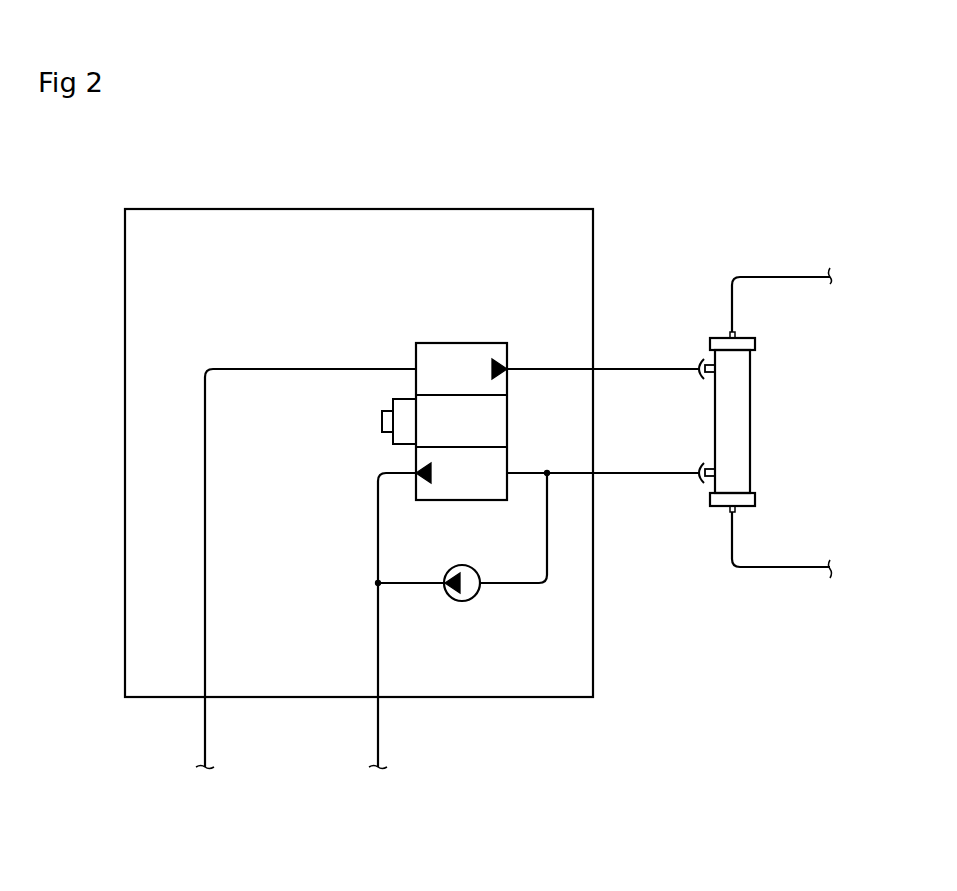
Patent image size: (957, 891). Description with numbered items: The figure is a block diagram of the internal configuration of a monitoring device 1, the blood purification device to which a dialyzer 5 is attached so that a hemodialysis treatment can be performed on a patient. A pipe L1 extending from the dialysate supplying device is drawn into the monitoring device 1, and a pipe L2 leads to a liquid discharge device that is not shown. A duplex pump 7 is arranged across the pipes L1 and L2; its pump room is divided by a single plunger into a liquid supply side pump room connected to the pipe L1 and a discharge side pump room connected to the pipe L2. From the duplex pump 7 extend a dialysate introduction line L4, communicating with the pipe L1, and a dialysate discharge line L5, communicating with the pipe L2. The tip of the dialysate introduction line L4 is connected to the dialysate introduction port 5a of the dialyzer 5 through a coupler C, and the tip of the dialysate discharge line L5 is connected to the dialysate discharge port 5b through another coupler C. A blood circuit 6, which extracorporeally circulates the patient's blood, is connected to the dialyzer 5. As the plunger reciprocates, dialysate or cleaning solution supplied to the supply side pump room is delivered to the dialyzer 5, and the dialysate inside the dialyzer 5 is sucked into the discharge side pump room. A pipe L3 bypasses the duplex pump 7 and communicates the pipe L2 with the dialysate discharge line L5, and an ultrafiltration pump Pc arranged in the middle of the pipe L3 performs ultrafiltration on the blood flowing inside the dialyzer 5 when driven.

The monitoring device 1 is at (528, 208).
The duplex pump 7 is at (483, 343).
The dialyzer 5 is at (750, 408).
The dialysate introduction port 5a is at (704, 362).
The dialysate discharge port 5b is at (704, 466).
The blood circuit 6 is at (800, 565).
The coupler C is at (700, 376).
The pipe L1 is at (205, 742).
The pipe L2 is at (378, 730).
The pipe L3 is at (547, 548).
The dialysate introduction line L4 is at (617, 368).
The dialysate discharge line L5 is at (617, 473).
The ultrafiltration pump Pc is at (465, 601).